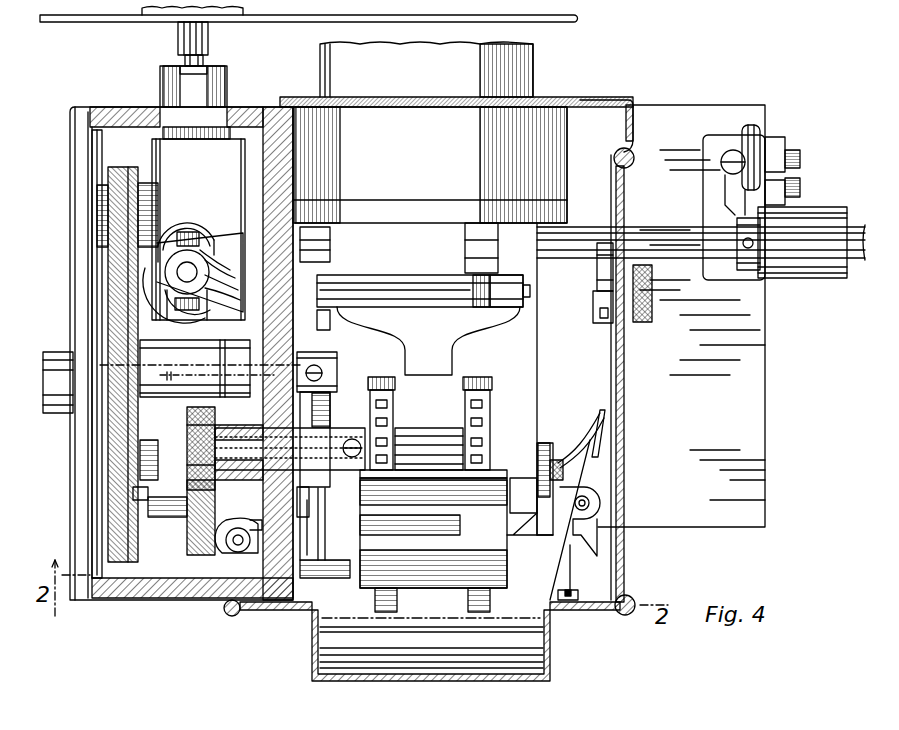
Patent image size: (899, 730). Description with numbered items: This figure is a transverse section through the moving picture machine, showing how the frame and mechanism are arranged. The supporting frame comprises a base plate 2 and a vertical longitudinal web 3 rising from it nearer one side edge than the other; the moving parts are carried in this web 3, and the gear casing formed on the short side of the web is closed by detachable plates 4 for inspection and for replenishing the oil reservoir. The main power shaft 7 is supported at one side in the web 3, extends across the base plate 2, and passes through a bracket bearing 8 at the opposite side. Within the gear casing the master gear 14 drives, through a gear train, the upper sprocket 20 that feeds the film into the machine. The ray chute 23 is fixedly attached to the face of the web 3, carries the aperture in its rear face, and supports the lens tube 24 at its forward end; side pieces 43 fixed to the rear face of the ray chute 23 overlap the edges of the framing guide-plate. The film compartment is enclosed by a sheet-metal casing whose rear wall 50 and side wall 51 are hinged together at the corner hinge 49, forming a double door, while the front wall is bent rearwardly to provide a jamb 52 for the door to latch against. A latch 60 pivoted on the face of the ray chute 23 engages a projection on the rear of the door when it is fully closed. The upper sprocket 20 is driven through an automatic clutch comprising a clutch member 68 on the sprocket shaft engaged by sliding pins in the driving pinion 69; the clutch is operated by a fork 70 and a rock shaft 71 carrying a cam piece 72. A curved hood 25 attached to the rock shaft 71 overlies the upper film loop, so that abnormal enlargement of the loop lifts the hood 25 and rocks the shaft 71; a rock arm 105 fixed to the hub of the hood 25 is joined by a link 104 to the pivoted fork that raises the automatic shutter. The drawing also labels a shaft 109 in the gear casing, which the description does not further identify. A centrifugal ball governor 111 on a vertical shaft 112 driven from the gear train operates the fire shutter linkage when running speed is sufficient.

The base plate 2 is at (695, 523).
The vertical longitudinal web 3 is at (252, 174).
The detachable plates 4 is at (90, 468).
The main power shaft 7 is at (657, 237).
The bracket bearing 8 is at (805, 272).
The master gear 14 is at (118, 503).
The upper sprocket 20 is at (492, 427).
The ray chute 23 is at (538, 350).
The lens tube 24 is at (530, 73).
The curved hood or loop cap 25 is at (433, 541).
The side pieces 43 is at (532, 530).
The hinge 49 is at (620, 618).
The rear wall 50 is at (533, 682).
The side wall 51 is at (622, 393).
The jamb 52 is at (637, 116).
The latch 60 is at (592, 475).
The clutch member 68 is at (118, 462).
The driving pinion 69 is at (190, 500).
The fork 70 is at (220, 552).
The rock shaft 71 is at (291, 450).
The cam piece 72 is at (205, 448).
The link 104 is at (310, 530).
The rock arm 105 is at (320, 500).
The shaft 109 is at (167, 375).
The centrifugal ball governor 111 is at (197, 240).
The vertical shaft 112 is at (206, 257).